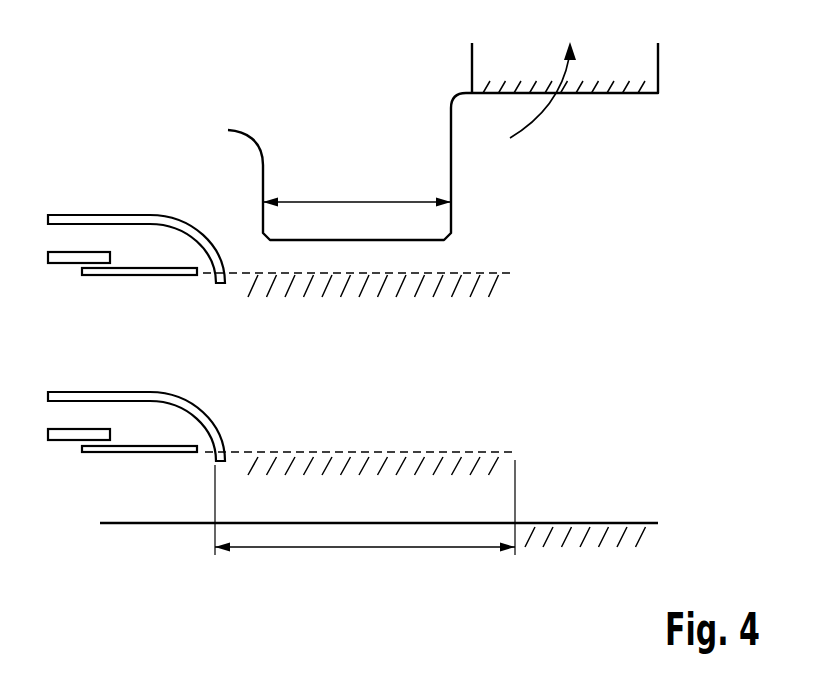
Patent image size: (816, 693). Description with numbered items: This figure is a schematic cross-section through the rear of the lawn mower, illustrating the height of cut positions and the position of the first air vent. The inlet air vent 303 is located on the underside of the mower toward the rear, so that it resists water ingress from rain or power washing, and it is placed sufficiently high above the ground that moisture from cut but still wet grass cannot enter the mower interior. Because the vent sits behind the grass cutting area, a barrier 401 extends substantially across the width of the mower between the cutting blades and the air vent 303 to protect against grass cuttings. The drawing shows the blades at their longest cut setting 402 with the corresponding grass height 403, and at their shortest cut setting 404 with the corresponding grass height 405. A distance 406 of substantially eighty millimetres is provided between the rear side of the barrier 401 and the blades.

The air vent 303 is at (545, 110).
The barrier 401 is at (355, 200).
The longest cut setting of the blades 402 is at (110, 214).
The grass height 403 is at (472, 274).
The shortest cut setting of the blades 404 is at (110, 391).
The grass height 405 is at (433, 452).
The distance 406 is at (363, 550).